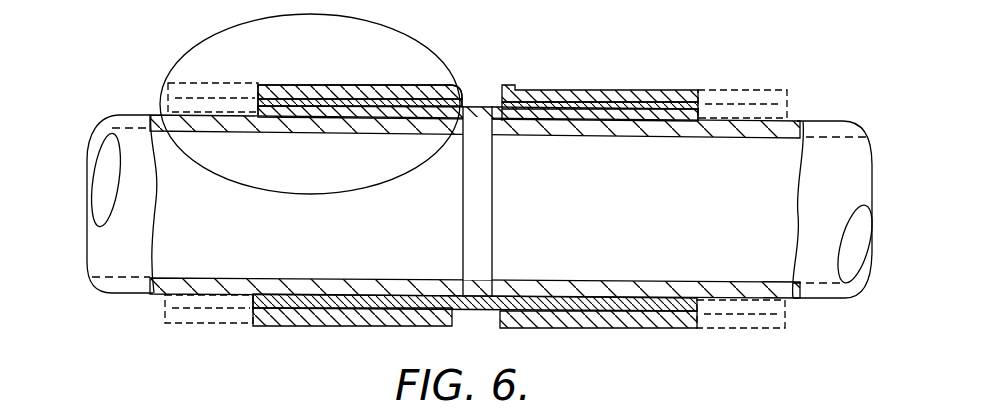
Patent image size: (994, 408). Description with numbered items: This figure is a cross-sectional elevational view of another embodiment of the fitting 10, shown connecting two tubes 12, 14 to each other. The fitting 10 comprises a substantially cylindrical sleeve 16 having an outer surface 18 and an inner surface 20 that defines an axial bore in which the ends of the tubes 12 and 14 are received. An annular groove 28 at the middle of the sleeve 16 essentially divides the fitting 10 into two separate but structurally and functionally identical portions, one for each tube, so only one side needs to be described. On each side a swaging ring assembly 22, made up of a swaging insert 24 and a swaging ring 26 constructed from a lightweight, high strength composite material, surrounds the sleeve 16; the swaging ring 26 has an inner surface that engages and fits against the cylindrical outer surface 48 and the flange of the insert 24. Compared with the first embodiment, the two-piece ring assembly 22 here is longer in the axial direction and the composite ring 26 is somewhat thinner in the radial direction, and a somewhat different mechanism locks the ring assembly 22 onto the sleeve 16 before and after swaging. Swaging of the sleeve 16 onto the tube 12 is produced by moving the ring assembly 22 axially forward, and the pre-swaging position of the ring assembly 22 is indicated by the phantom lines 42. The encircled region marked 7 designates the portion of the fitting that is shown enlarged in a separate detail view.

The detail area of FIG. 7 is at (372, 24).
The fitting 10 is at (792, 60).
The tube 12 is at (117, 113).
The tube 14 is at (840, 122).
The sleeve 16 is at (508, 84).
The outer surface 18 is at (363, 110).
The inner surface 20 is at (322, 118).
The swaging ring assembly 22 is at (645, 80).
The swaging insert 24 is at (272, 84).
The swaging ring 26 is at (408, 83).
The annular groove 28 is at (478, 103).
The phantom lines 42 is at (196, 63).
The outer surface 48 is at (202, 351).